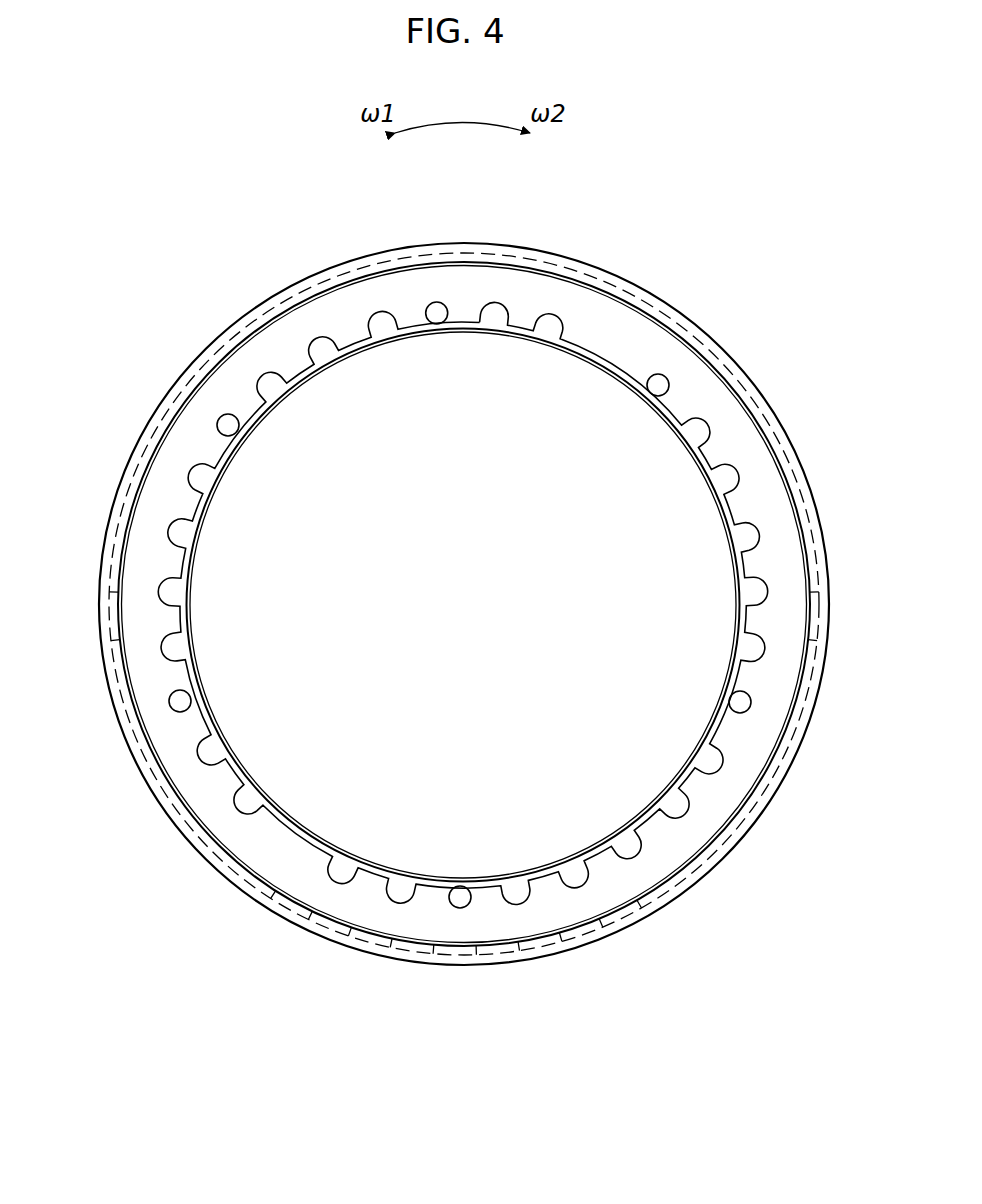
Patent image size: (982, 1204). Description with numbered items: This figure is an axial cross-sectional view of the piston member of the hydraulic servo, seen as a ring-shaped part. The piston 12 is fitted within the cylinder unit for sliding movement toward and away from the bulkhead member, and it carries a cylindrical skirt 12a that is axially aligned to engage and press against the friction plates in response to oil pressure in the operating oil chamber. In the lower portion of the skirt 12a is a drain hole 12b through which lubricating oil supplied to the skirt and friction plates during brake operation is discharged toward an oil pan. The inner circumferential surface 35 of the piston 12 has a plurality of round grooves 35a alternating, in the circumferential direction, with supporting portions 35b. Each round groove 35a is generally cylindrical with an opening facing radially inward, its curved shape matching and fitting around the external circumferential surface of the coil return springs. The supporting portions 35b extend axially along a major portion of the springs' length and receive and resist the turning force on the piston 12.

The piston 12 is at (580, 250).
The cylindrical skirt 12a is at (276, 300).
The drain hole 12b is at (565, 948).
The inner circumferential surface 35 is at (320, 322).
The round grooves 35a is at (440, 318).
The supporting portions 35b is at (405, 322).